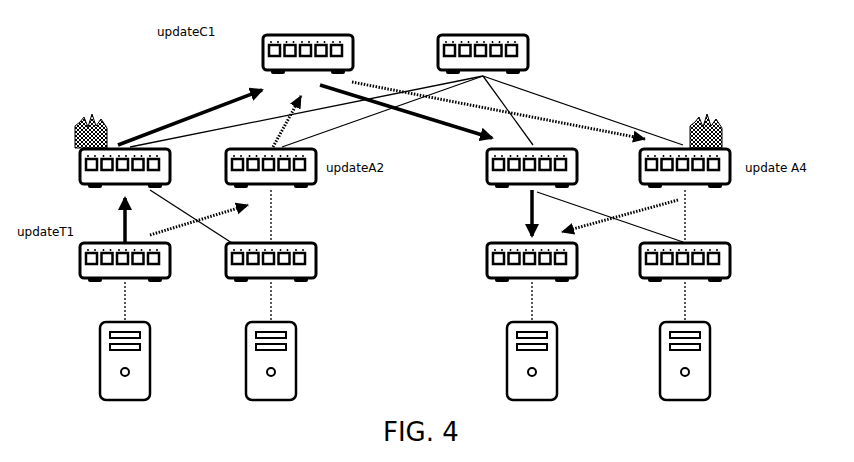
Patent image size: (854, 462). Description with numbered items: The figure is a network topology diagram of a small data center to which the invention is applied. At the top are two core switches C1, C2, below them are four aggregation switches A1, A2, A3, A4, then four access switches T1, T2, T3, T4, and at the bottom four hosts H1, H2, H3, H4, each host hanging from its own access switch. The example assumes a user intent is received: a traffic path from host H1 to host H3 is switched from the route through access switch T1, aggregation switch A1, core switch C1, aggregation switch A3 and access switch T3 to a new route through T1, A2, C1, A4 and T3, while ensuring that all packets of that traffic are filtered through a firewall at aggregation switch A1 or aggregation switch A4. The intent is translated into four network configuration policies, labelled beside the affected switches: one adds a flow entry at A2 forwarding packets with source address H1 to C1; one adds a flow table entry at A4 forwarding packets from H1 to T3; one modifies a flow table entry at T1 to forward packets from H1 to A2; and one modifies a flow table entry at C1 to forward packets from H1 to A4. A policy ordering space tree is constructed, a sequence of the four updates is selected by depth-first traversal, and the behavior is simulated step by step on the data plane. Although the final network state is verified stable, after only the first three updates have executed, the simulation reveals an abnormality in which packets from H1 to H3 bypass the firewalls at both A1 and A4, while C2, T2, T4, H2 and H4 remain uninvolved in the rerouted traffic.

The core switch C1 is at (296, 54).
The core switch C2 is at (471, 54).
The aggregation switch A1 is at (110, 168).
The aggregation switch A2 is at (259, 168).
The aggregation switch A3 is at (516, 168).
The aggregation switch A4 is at (673, 168).
The access switch T1 is at (107, 262).
The access switch T2 is at (259, 262).
The access switch T3 is at (517, 262).
The access switch T4 is at (672, 262).
The host H1 is at (105, 361).
The host H2 is at (255, 361).
The host H3 is at (516, 361).
The host H4 is at (670, 361).